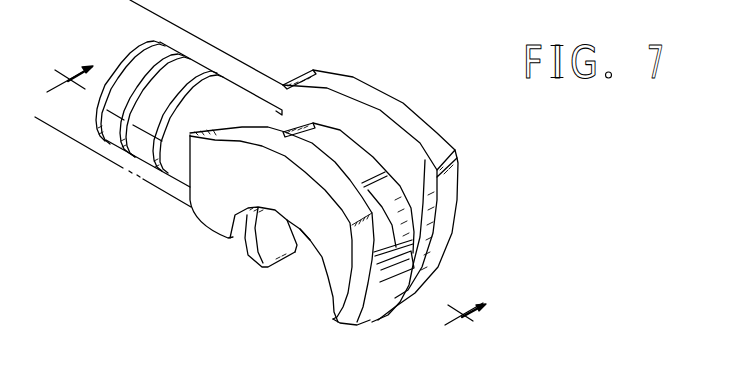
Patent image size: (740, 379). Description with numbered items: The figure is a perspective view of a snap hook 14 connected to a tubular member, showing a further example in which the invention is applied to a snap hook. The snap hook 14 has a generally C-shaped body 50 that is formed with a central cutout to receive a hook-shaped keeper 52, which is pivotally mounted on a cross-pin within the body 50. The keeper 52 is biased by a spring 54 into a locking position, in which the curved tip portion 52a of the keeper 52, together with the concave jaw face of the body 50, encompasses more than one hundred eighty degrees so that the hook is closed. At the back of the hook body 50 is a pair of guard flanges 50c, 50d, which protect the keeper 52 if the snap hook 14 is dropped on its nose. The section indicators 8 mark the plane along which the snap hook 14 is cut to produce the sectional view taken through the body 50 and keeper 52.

The section line 8- 8 is at (271, 189).
The snap hook 14 is at (166, 259).
The C-shaped body 50 is at (463, 179).
The guard flange 50c is at (330, 229).
The guard flange 50d is at (417, 122).
The keeper 52 is at (254, 265).
The curved tip portion 52a is at (259, 245).
The spring 54 is at (411, 260).